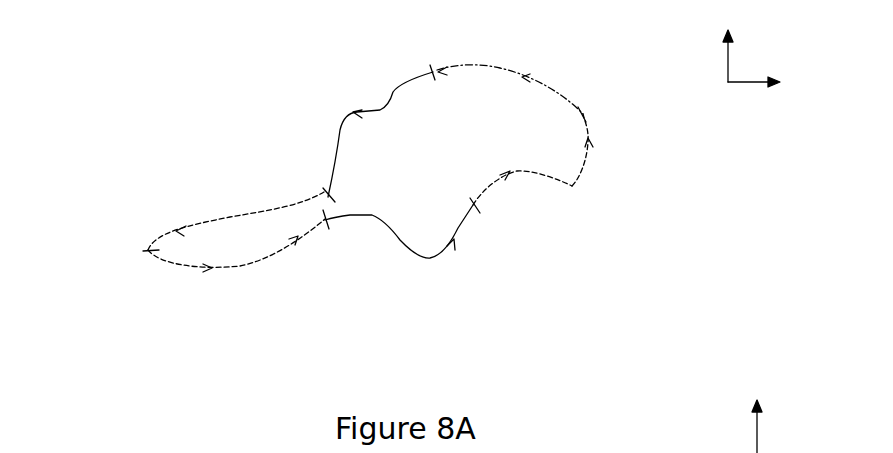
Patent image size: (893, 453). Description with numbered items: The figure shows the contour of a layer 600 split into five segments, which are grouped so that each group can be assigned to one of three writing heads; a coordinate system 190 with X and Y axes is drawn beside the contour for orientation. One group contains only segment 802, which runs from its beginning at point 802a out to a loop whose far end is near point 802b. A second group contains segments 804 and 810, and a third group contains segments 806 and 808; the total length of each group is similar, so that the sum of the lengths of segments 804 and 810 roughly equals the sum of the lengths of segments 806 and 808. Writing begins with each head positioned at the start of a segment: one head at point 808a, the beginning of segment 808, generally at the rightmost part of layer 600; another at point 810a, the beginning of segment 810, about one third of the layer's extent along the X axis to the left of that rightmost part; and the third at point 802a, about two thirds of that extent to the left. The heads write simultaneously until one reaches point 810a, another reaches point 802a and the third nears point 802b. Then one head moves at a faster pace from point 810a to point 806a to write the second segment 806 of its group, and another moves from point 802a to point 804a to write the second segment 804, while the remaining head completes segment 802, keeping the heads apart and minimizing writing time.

The layer 600 is at (206, 108).
The coordinate system 190 is at (718, 78).
The segment 802 is at (175, 263).
The point 802a is at (327, 192).
The point 802b is at (147, 250).
The segment 804 is at (402, 242).
The point 804a is at (325, 222).
The segment 806 is at (572, 186).
The point 806a is at (477, 203).
The segment 808 is at (490, 66).
The point 808a is at (587, 112).
The segment 810 is at (393, 96).
The point 810a is at (432, 70).